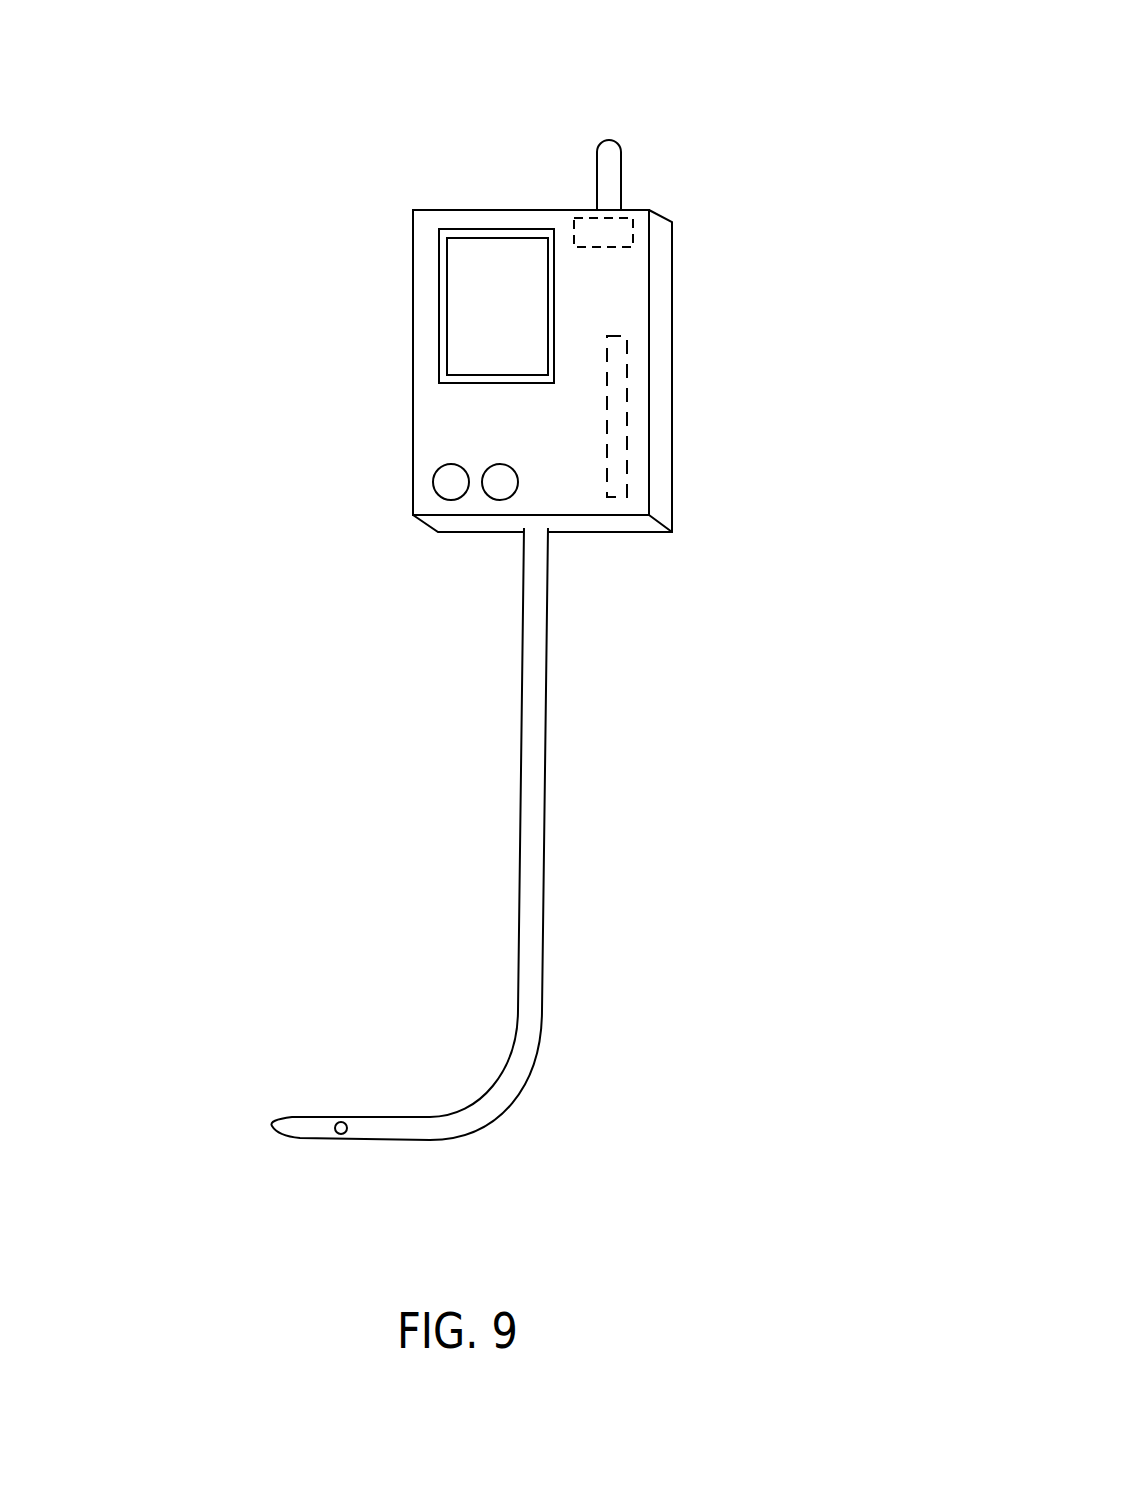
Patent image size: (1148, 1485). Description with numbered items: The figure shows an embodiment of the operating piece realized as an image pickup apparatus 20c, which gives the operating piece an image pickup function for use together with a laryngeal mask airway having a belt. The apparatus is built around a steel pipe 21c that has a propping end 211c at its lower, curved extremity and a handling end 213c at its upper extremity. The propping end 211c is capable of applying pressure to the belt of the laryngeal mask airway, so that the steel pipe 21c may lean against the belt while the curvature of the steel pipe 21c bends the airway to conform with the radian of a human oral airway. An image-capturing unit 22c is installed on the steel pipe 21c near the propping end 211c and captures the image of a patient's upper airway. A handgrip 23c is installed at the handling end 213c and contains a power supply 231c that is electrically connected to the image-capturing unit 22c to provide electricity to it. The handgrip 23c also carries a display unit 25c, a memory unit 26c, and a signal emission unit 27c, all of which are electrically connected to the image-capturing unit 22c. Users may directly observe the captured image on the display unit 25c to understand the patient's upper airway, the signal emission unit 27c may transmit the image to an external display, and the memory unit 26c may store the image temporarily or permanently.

The image pickup apparatus 20c is at (280, 618).
The steel pipe 21c is at (535, 752).
The propping end 211c is at (290, 1119).
The handling end 213c is at (535, 597).
The image-capturing unit 22c is at (337, 1133).
The handgrip 23c is at (448, 423).
The power supply 231c is at (615, 418).
The display unit 25c is at (485, 283).
The memory unit 26c is at (607, 233).
The signal emission unit 27c is at (615, 153).